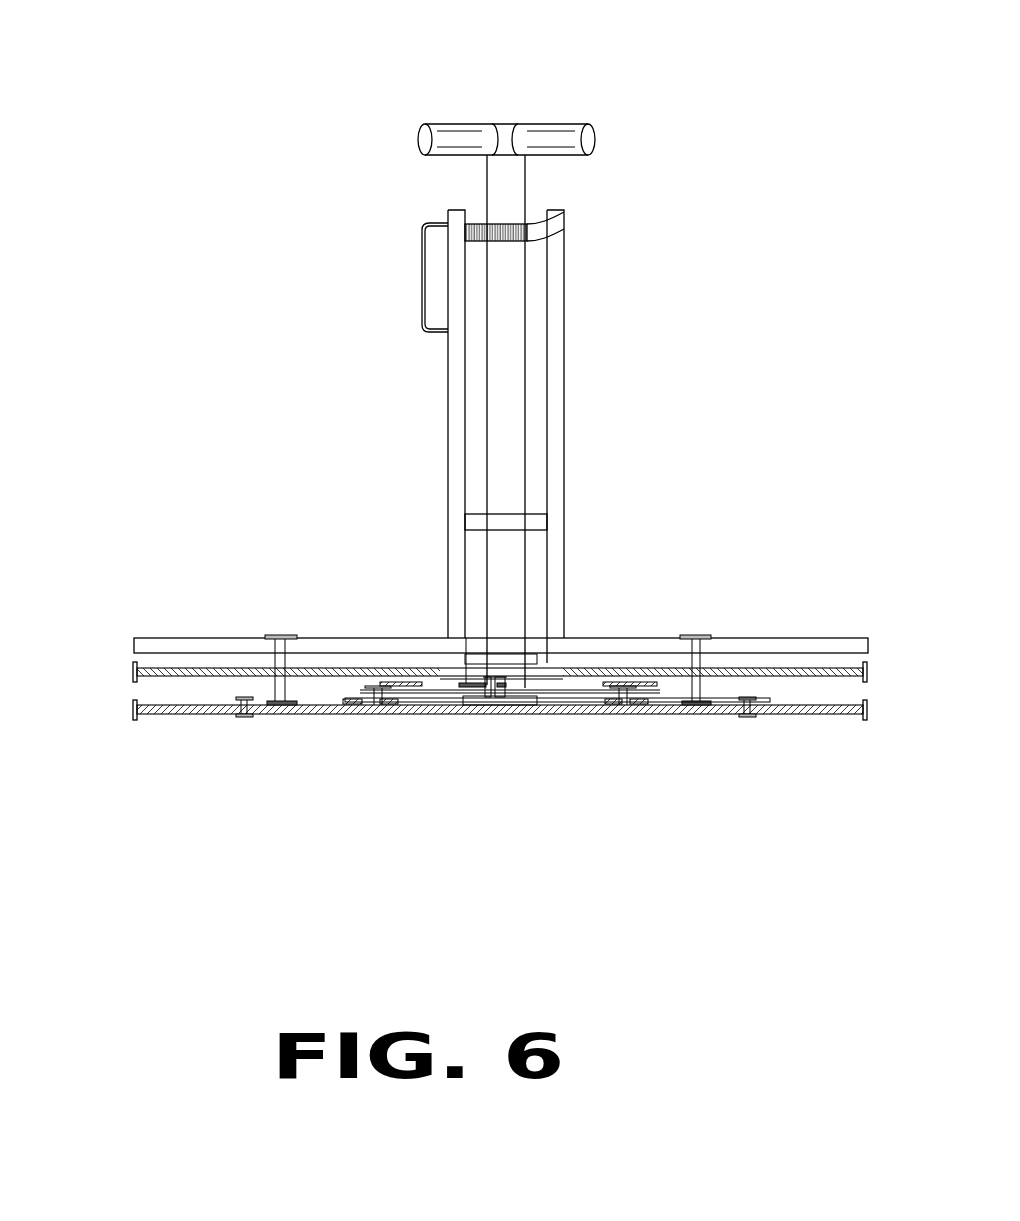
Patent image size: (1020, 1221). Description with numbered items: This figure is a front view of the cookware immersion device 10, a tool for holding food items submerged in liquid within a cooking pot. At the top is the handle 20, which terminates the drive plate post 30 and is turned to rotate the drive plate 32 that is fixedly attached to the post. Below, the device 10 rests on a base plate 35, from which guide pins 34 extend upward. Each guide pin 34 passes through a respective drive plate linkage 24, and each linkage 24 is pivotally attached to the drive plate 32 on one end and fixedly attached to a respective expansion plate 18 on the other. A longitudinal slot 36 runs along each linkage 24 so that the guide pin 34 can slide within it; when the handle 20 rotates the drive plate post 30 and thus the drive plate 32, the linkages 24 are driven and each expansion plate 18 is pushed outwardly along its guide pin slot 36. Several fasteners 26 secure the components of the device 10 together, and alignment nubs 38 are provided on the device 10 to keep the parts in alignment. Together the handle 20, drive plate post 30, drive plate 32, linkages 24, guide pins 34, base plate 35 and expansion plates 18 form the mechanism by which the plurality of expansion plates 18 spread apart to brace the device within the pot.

The cookware immersion device 10 is at (382, 108).
The handle 20 is at (590, 140).
The drive plate post 30 is at (520, 186).
The base plate 35 is at (163, 636).
The guide pin 34 is at (277, 634).
The fastener 26 is at (413, 705).
The alignment nub 38 is at (136, 711).
The expansion plate 18 is at (215, 678).
The longitudinal slot 36 is at (306, 709).
The drive plate linkage 24 is at (348, 701).
The drive plate 32 is at (447, 696).